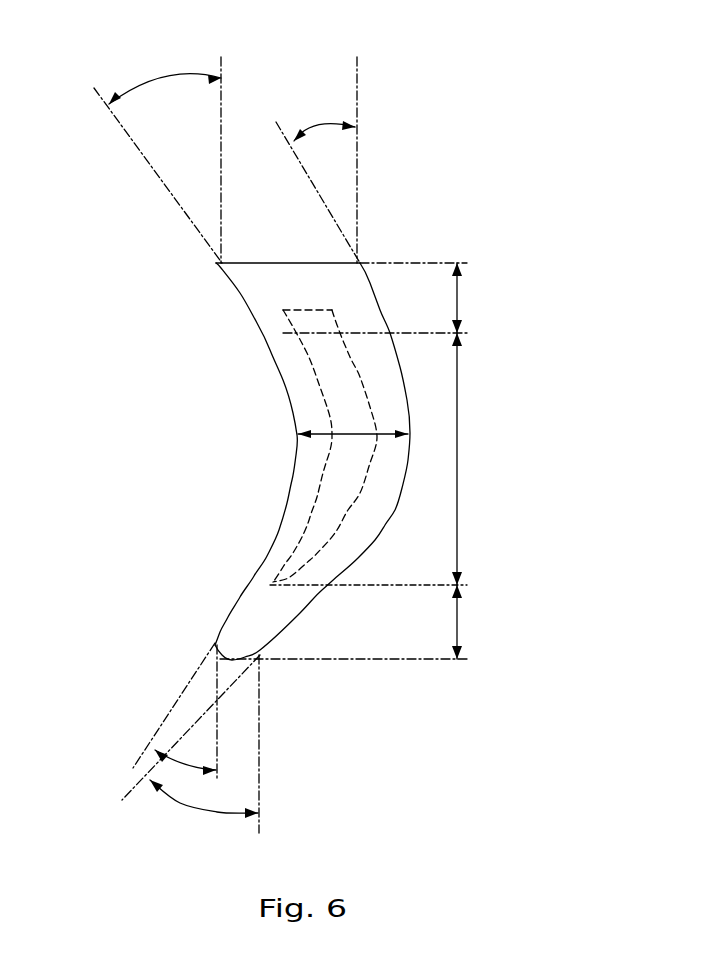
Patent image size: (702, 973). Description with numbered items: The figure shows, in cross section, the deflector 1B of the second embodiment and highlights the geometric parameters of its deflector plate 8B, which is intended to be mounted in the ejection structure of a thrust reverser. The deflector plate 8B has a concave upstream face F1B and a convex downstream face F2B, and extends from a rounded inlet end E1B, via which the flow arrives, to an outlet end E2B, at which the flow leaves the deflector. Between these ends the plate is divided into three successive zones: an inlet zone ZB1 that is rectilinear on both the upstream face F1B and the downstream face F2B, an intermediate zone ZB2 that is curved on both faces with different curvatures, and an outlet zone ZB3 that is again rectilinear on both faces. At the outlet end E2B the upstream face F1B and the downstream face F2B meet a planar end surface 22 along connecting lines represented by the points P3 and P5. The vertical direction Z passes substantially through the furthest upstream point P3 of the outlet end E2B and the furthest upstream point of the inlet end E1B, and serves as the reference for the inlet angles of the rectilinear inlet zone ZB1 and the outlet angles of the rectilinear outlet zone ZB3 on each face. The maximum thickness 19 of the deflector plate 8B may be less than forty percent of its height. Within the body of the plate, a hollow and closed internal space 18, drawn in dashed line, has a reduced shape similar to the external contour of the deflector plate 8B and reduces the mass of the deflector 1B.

The deflector 1B is at (276, 493).
The deflector plate 8B is at (313, 603).
The internal space 18 is at (348, 510).
The maximum thickness 19 is at (350, 433).
The end surface 22 is at (258, 263).
The point P3 is at (217, 263).
The point P5 is at (371, 256).
The inlet end E1B is at (267, 667).
The outlet end E2B is at (390, 260).
The vertical direction Z is at (224, 93).
The inlet zone ZB1 is at (457, 618).
The intermediate zone ZB2 is at (457, 455).
The outlet zone ZB3 is at (457, 297).
The upstream face F1B is at (291, 423).
The downstream face F2B is at (412, 391).